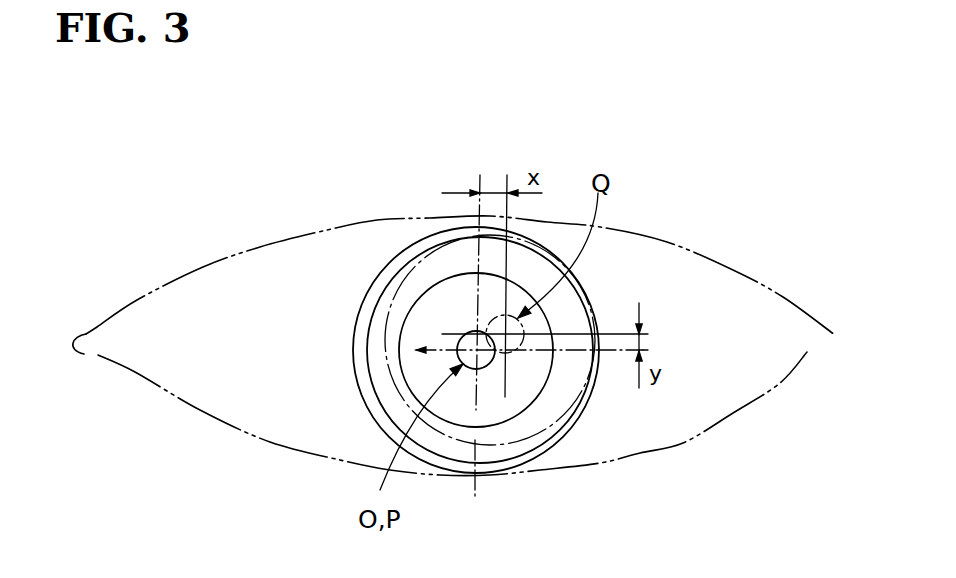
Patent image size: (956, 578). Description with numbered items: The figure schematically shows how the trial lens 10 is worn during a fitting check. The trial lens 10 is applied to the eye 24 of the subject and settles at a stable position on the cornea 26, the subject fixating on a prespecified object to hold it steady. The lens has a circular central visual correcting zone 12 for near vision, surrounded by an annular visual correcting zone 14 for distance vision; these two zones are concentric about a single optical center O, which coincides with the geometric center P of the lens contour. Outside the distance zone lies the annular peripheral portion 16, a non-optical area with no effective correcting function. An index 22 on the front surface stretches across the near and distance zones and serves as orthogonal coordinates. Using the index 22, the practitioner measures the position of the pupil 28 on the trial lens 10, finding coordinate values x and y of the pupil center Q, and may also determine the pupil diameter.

The trial lens 10 is at (357, 264).
The visual correcting zone for near vision 12 is at (489, 363).
The visual correcting zone for distance vision 14 is at (450, 295).
The annular peripheral portion 16 is at (402, 253).
The index 22 is at (412, 358).
The eye 24 is at (197, 257).
The cornea 26 is at (476, 497).
The pupil 28 is at (523, 329).